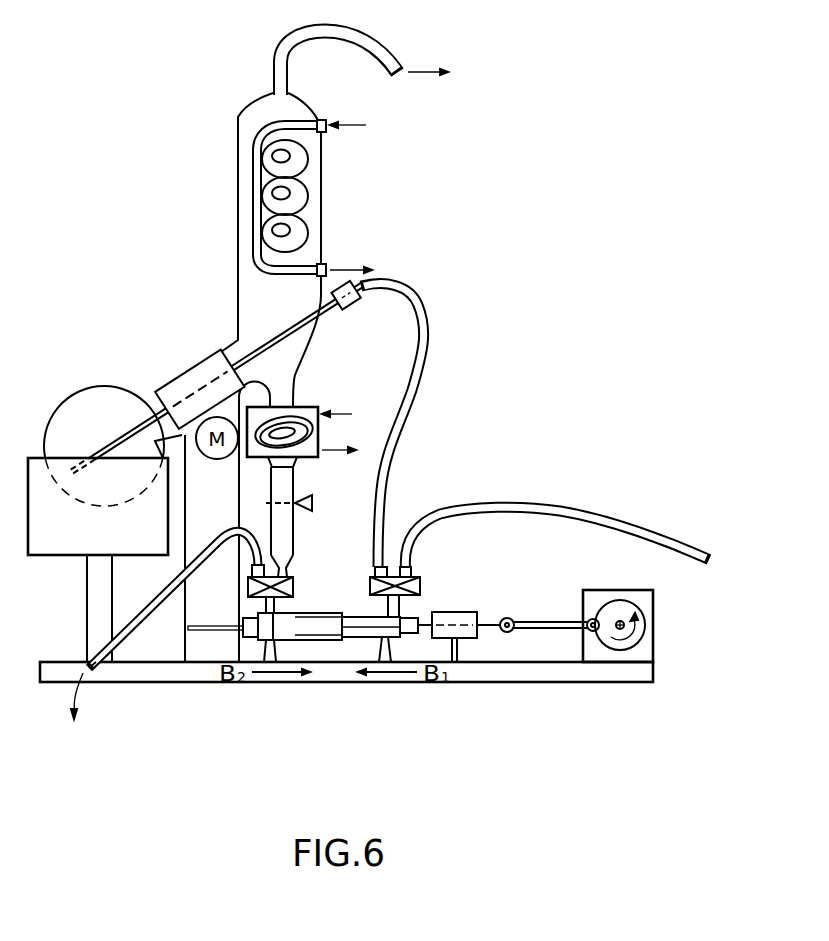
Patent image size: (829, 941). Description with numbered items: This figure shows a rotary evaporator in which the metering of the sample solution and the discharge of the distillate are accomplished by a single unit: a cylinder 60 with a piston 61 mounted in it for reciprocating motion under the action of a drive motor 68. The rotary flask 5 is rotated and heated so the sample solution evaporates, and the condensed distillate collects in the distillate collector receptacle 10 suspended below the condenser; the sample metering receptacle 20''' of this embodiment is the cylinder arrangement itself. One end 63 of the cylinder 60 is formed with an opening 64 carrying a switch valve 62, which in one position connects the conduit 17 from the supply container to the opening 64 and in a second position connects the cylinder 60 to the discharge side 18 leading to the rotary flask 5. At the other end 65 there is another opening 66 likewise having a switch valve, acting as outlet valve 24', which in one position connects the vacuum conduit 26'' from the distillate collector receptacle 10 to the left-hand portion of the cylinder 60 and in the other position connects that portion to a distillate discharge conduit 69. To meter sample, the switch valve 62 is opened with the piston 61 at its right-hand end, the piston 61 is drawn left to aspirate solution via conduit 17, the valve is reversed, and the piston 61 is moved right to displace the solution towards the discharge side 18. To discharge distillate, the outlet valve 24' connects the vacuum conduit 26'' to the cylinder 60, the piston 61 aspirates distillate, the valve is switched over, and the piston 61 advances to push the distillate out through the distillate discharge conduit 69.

The rotary flask 5 is at (105, 408).
The distillate collector receptacle 10 is at (267, 503).
The vacuum conduit 26'' is at (177, 585).
The outlet valve 24' is at (316, 546).
The sample metering receptacle 20''' is at (320, 591).
The discharge side 18 is at (410, 278).
The switch valve 62 is at (418, 562).
The opening 64 is at (421, 597).
The conduit 17 is at (525, 511).
The drive motor 68 is at (638, 600).
The distillate discharge conduit 69 is at (128, 626).
The opening 66 is at (273, 605).
The other end of cylinder 65 is at (260, 635).
The piston 61 is at (328, 631).
The cylinder 60 is at (357, 646).
The one end of cylinder 63 is at (403, 630).